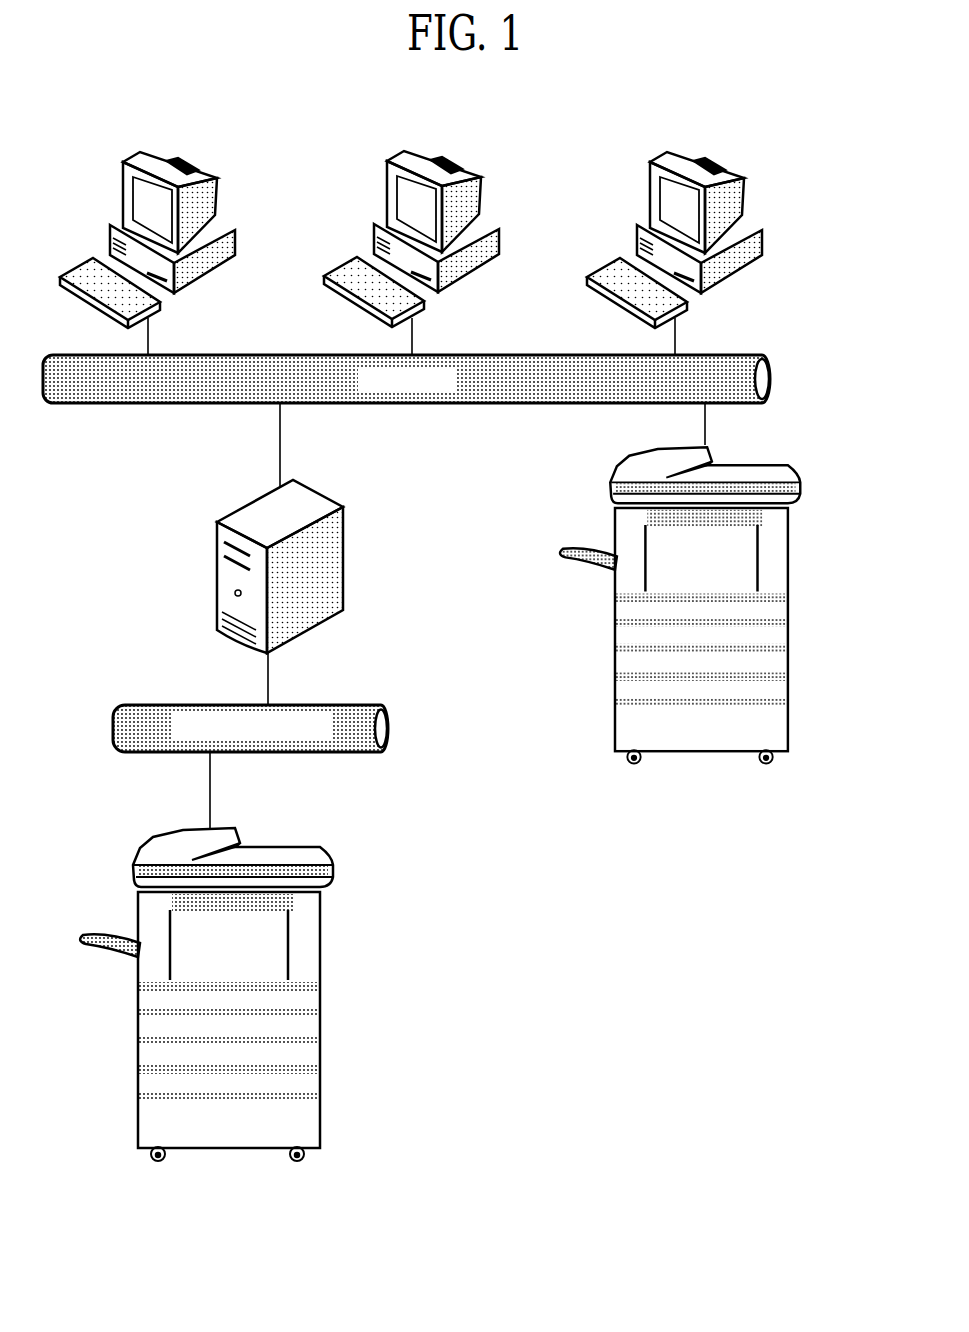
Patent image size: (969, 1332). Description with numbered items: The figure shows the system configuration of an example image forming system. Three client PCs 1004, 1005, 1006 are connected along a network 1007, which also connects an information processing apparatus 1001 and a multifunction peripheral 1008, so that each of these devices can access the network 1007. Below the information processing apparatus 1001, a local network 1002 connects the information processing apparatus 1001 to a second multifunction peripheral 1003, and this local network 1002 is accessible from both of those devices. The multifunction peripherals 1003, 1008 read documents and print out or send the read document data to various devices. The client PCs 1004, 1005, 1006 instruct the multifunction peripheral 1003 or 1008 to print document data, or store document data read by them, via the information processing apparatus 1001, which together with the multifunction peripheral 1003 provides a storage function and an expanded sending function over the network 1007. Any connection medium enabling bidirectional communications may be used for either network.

The information processing apparatus 1001 is at (343, 548).
The local network 1002 is at (392, 727).
The multifunction peripheral 1003 is at (312, 1048).
The client PC 1004 is at (202, 168).
The client PC 1005 is at (462, 165).
The client PC 1006 is at (722, 165).
The network 1007 is at (772, 378).
The multifunction peripheral 1008 is at (770, 460).